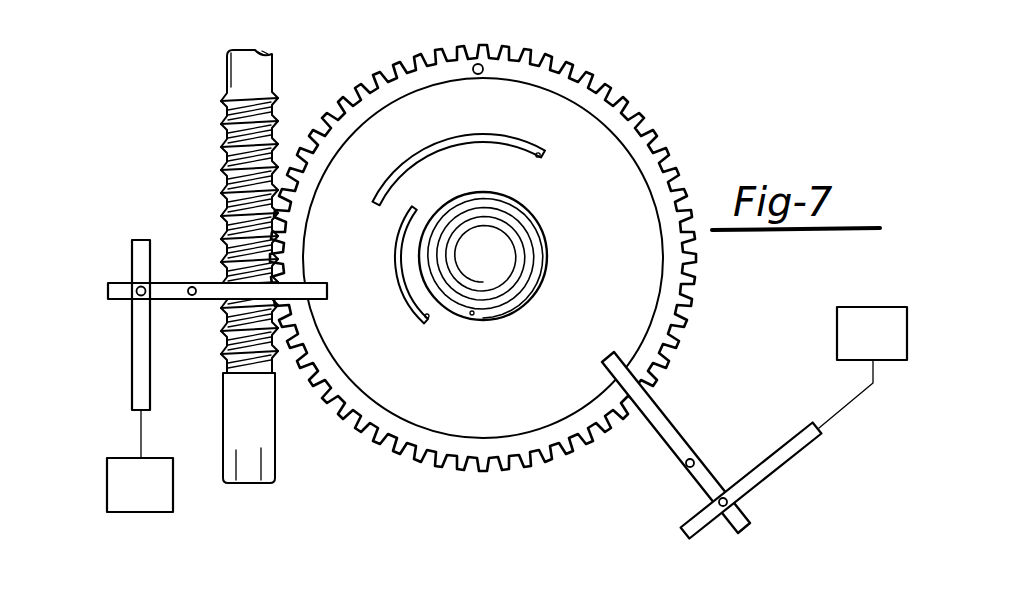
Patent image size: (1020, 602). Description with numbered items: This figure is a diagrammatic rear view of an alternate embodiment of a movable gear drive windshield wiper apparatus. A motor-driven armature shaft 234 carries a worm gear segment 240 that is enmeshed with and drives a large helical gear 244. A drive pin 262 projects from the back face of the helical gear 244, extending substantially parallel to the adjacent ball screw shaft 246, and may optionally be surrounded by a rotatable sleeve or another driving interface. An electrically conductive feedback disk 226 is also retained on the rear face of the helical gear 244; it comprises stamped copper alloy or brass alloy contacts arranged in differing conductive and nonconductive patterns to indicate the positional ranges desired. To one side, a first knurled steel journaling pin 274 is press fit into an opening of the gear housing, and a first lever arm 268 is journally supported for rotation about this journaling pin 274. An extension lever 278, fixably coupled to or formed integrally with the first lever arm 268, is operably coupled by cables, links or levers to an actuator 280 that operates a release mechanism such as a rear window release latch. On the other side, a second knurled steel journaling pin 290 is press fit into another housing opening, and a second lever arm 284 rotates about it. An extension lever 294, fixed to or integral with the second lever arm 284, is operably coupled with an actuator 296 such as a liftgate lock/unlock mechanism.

The electrically conductive feedback disk 226 is at (524, 186).
The armature shaft 234 is at (237, 65).
The worm gear segment 240 is at (233, 125).
The helical gear 244 is at (600, 148).
The ball screw shaft 246 is at (485, 258).
The drive pin 262 is at (484, 70).
The first lever arm 268 is at (648, 407).
The first knurled steel journaling pin 274 is at (692, 455).
The extension lever 278 is at (765, 472).
The actuator 280 is at (890, 348).
The second lever arm 284 is at (160, 290).
The second knurled steel journaling pin 290 is at (192, 286).
The extension lever 294 is at (133, 325).
The actuator 296 is at (118, 470).